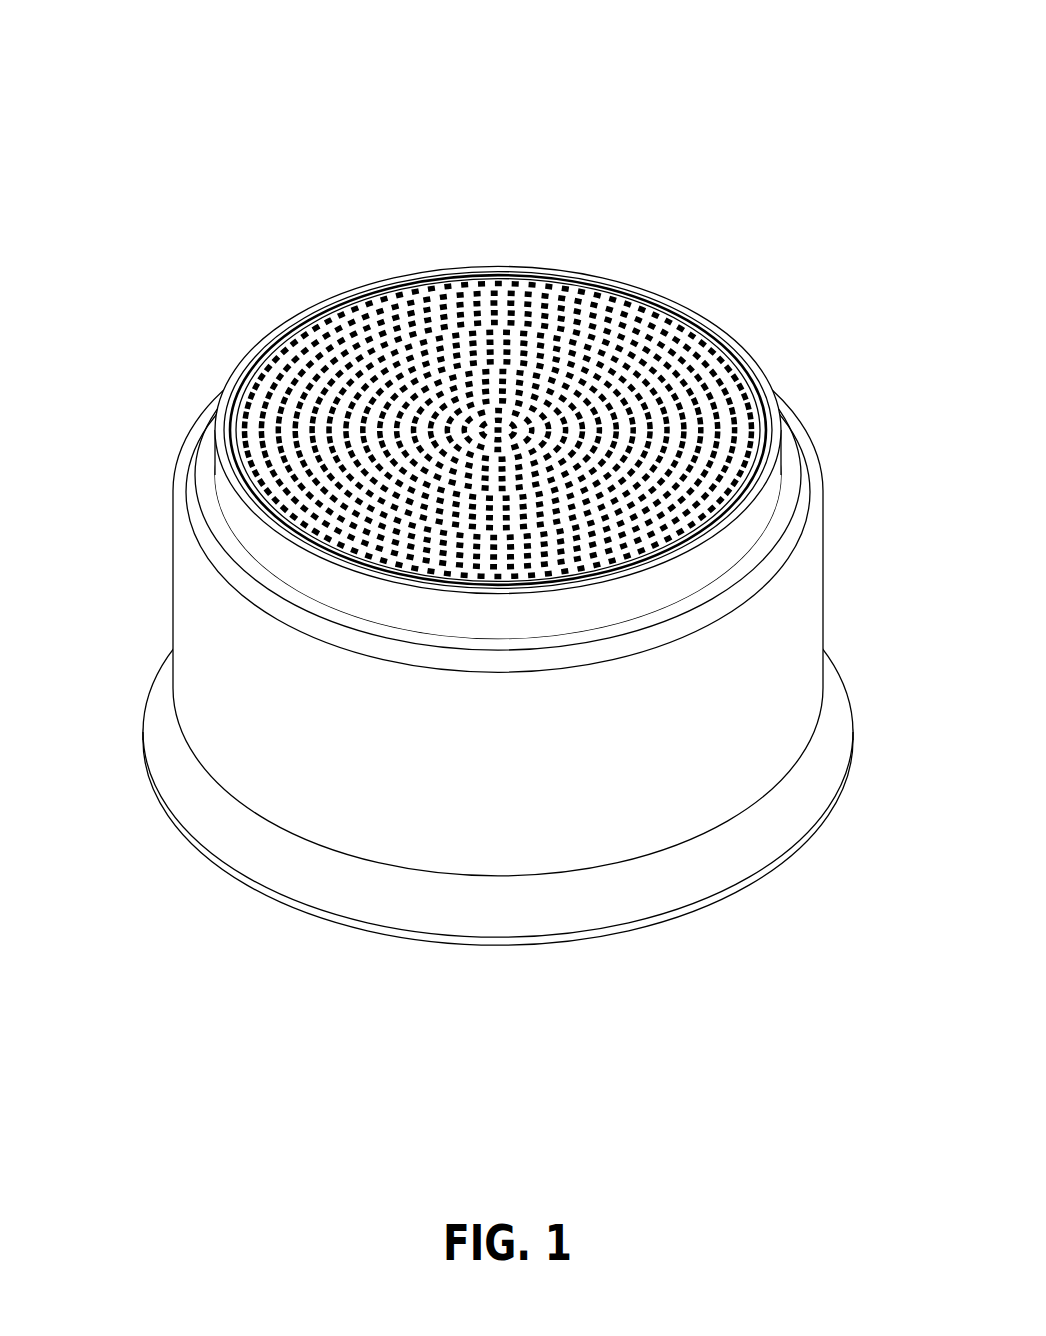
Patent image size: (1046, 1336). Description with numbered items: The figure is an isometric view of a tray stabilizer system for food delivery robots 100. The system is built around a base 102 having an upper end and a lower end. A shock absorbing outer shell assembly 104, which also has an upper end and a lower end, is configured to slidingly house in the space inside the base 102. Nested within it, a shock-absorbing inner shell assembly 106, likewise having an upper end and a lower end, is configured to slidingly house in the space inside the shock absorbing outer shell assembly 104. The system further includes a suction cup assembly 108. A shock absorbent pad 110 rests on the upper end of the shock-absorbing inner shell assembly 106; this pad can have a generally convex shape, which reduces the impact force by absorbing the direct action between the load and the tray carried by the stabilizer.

The tray stabilizer system for food delivery robots 100 is at (501, 533).
The base 102 is at (277, 705).
The shock absorbing outer shell assembly 104 is at (747, 582).
The shock-absorbing inner shell assembly 106 is at (753, 515).
The suction cup assembly 108 is at (285, 867).
The shock absorbent pad 110 is at (688, 356).